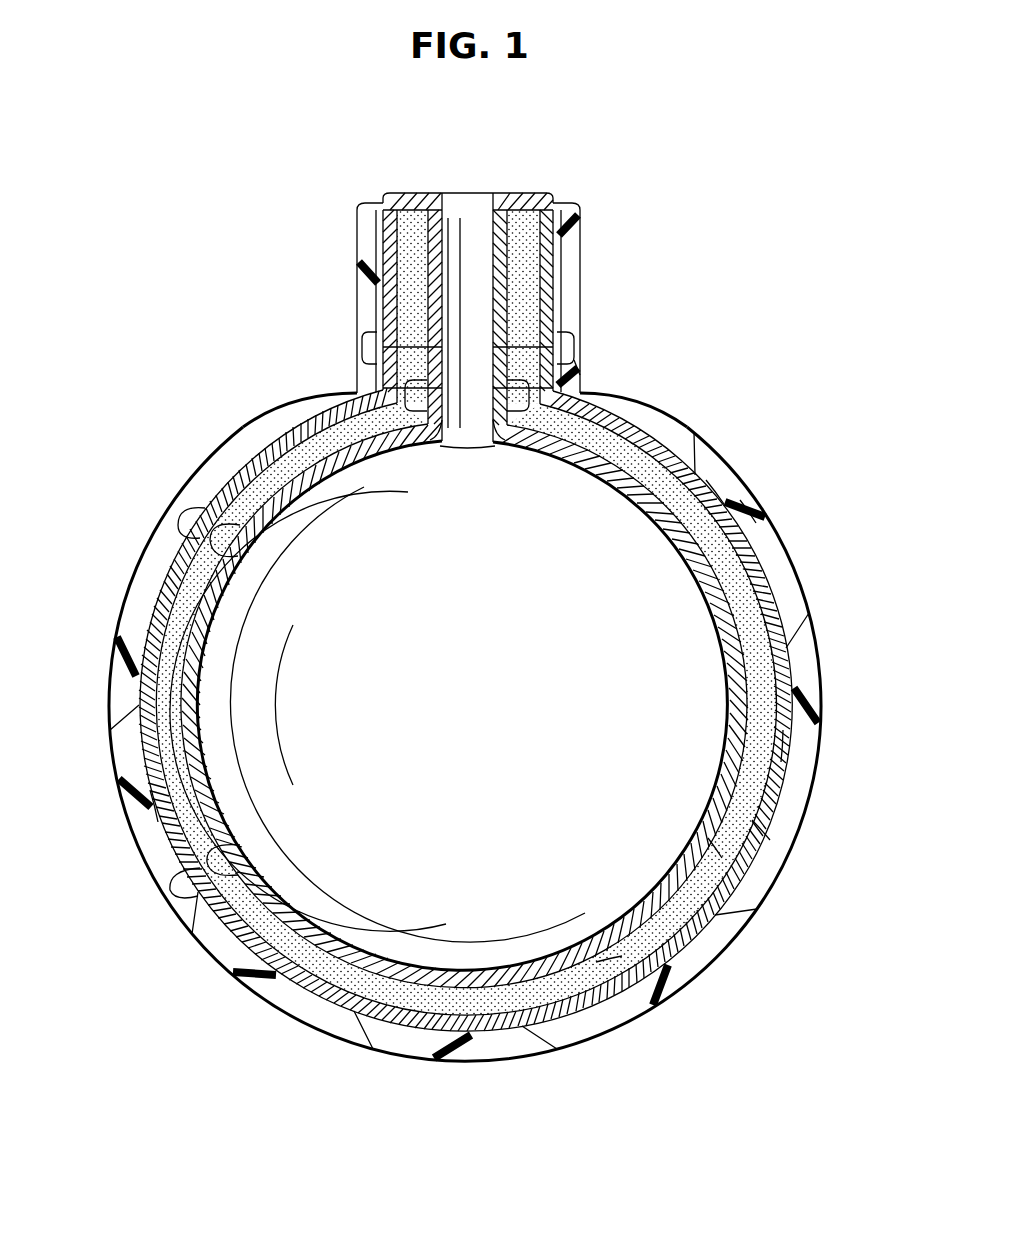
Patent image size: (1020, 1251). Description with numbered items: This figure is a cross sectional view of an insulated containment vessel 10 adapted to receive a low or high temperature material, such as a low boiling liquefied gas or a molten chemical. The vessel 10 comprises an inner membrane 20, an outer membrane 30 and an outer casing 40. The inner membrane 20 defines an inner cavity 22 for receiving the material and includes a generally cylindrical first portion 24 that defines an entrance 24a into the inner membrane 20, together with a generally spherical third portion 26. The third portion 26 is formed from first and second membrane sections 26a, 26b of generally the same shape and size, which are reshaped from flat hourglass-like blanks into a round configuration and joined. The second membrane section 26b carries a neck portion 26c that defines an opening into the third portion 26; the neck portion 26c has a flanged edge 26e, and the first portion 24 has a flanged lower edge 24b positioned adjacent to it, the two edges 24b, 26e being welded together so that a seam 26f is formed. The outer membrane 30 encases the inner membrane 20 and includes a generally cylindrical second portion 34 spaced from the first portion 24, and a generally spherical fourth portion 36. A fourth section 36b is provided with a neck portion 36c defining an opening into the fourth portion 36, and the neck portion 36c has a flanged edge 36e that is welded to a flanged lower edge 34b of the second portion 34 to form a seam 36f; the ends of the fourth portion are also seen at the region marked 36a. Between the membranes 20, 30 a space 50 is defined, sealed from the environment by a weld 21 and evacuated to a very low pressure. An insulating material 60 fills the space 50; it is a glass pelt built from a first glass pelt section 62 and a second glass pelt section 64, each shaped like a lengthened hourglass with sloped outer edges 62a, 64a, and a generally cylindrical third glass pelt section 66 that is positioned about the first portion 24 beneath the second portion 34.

The insulated containment vessel 10 is at (752, 308).
The inner membrane 20 is at (745, 510).
The weld 21 is at (542, 197).
The inner cavity 22 is at (715, 497).
The first portion 24 is at (497, 248).
The entrance 24a is at (462, 190).
The flanged lower edge 24b is at (565, 330).
The third portion 26 is at (735, 723).
The first membrane section 26a is at (197, 707).
The second membrane section 26b is at (380, 957).
The neck portion 26c is at (433, 432).
The flanged edge 26e is at (533, 395).
The seam 26f is at (405, 393).
The outer membrane 30 is at (742, 578).
The second portion 34 is at (527, 260).
The flanged lower edge 34b is at (370, 335).
The fourth portion 36 is at (700, 440).
The jacket first end 36a is at (155, 808).
The fourth section 36b is at (760, 830).
The neck portion 36c is at (570, 368).
The flanged edge 36e is at (368, 343).
The seam 36f is at (578, 365).
The outer casing 40 is at (800, 635).
The space 50 is at (770, 760).
The insulating material 60 is at (718, 852).
The first glass pelt section 62 is at (183, 768).
The outer edge 62a is at (245, 523).
The second glass pelt section 64 is at (610, 968).
The outer edge 64a is at (237, 513).
The third glass pelt section 66 is at (557, 257).